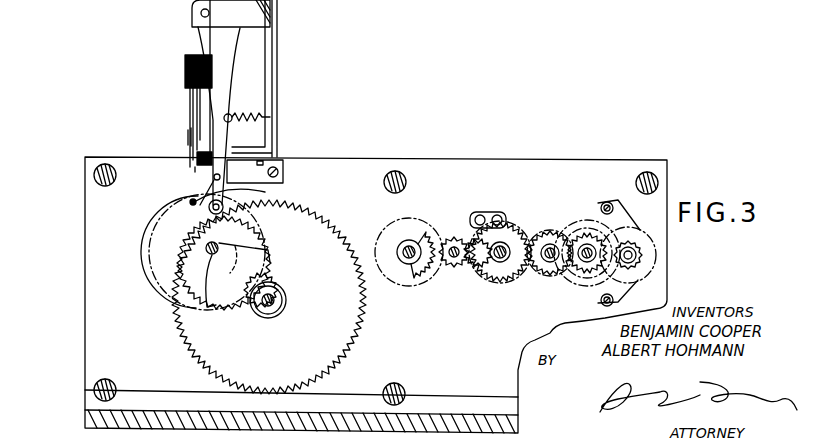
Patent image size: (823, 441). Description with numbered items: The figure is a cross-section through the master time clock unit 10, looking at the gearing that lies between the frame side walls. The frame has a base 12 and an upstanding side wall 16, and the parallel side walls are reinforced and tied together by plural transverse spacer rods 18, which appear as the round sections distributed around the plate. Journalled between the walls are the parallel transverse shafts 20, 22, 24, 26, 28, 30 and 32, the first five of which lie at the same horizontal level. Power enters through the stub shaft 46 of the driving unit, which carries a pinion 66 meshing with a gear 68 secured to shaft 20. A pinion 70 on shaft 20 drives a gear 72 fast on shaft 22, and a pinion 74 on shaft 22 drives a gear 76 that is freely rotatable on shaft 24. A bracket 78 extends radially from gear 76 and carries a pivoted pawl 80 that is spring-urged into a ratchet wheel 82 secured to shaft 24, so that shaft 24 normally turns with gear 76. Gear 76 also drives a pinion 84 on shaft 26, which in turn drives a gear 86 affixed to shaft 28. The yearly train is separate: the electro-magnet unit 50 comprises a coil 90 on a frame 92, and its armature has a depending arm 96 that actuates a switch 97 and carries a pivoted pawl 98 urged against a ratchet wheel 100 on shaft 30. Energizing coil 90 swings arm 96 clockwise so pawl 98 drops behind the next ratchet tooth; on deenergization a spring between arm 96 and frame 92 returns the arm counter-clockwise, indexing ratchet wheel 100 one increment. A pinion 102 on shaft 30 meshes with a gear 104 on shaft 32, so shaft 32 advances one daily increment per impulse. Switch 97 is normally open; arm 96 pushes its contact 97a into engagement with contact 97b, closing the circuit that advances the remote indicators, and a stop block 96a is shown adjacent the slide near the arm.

The master time clock unit 10 is at (488, 161).
The base 12 is at (521, 420).
The side wall 16 is at (562, 160).
The transverse spacer rods 18 is at (112, 165).
The shaft 20 is at (586, 245).
The shaft 22 is at (548, 245).
The shaft 24 is at (498, 262).
The shaft 26 is at (452, 262).
The shaft 28 is at (405, 262).
The shaft 30 is at (281, 300).
The shaft 32 is at (219, 240).
The stub shaft 46 is at (631, 248).
The electro-magnet unit 50 is at (282, 83).
The pinion 66 is at (630, 272).
The gear 68 is at (608, 246).
The pinion 70 is at (588, 265).
The gear 72 is at (553, 265).
The pinion 74 is at (545, 268).
The gear 76 is at (477, 265).
The bracket 78 is at (481, 214).
The pawl 80 is at (501, 216).
The ratchet wheel 82 is at (503, 270).
The pinion 84 is at (456, 241).
The gear 86 is at (424, 238).
The electromagnet coil 90 is at (253, 72).
The frame 92 is at (276, 138).
The depending arm 96 is at (236, 55).
The stop block 96a is at (205, 150).
The switch 97 is at (184, 74).
The contact 97a is at (195, 172).
The contact 97b is at (190, 137).
The pawl 98 is at (263, 193).
The ratchet wheel 100 is at (290, 222).
The pinion 102 is at (278, 278).
The gear 104 is at (265, 262).